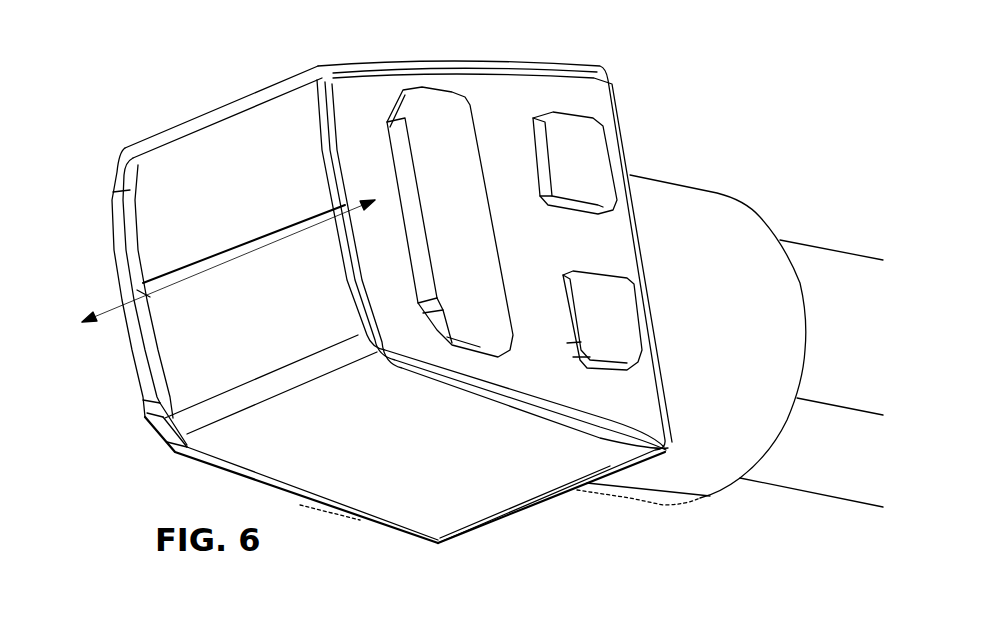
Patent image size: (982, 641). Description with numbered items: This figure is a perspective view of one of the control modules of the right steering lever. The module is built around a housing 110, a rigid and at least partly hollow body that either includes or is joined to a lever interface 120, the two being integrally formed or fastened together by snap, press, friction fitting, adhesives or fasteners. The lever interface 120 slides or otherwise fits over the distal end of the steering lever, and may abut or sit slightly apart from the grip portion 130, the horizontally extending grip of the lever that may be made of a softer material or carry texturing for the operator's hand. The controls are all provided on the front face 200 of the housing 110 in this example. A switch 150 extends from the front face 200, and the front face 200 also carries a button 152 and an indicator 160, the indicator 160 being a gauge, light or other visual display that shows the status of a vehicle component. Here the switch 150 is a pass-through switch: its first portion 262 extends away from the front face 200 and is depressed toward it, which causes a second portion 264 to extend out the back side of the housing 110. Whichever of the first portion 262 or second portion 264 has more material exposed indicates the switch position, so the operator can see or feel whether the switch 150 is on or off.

The housing 110 is at (242, 113).
The front face 200 is at (507, 92).
The switch 150 is at (442, 115).
The button 152 is at (575, 137).
The indicator 160 is at (617, 320).
The first portion 262 is at (443, 330).
The second portion 264 is at (147, 392).
The lever interface 120 is at (720, 215).
The grip portion 130 is at (817, 458).